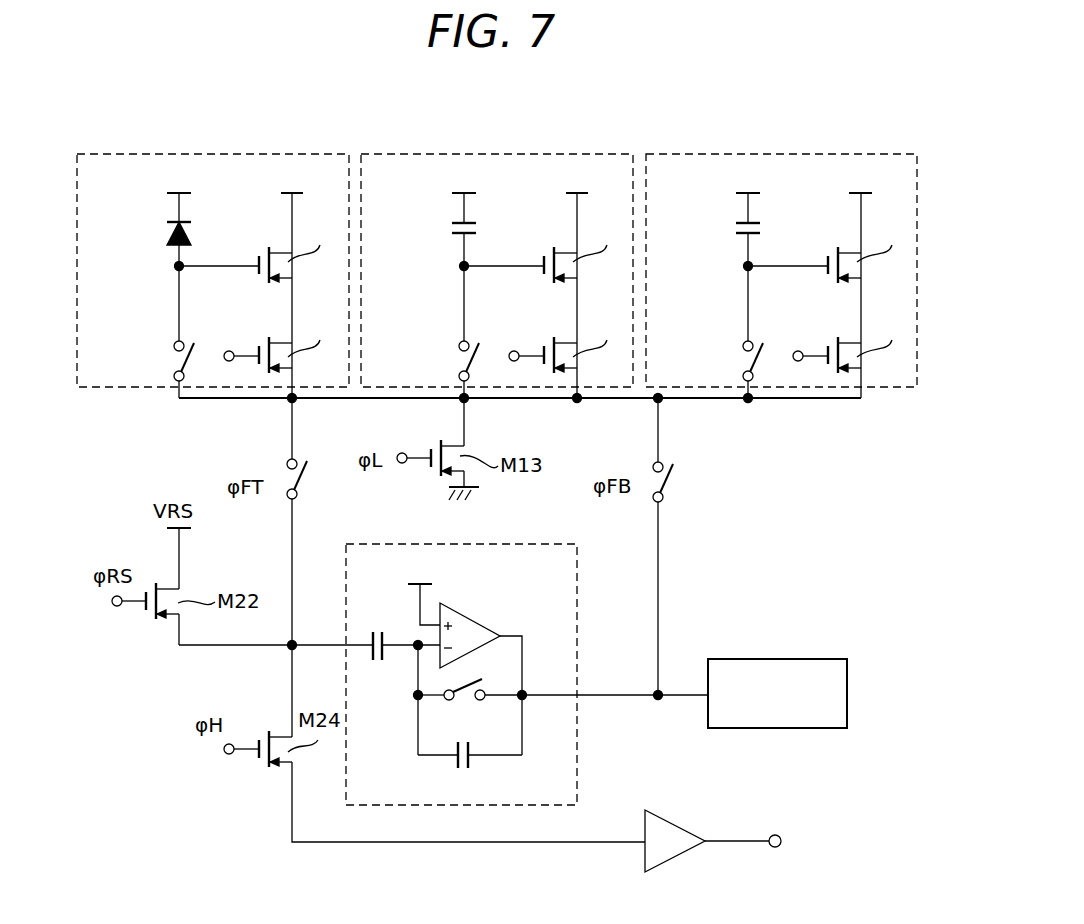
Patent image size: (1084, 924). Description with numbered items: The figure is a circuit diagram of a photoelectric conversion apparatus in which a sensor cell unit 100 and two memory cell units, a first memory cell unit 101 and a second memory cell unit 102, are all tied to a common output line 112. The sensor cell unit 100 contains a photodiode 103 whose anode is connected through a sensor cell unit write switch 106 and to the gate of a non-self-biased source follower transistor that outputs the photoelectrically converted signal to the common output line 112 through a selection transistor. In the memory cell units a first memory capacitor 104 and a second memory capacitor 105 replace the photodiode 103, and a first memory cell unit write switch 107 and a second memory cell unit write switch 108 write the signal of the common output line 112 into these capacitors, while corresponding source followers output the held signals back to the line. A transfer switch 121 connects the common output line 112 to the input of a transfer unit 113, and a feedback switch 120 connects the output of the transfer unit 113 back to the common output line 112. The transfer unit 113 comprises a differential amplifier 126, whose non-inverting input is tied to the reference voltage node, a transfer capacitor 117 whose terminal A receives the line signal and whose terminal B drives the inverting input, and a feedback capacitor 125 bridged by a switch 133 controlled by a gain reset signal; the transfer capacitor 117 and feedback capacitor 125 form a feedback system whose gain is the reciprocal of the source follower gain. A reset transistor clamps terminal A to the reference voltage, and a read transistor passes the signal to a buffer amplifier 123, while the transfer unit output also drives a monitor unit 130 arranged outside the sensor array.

The sensor cell unit 100 is at (205, 153).
The first memory cell unit 101 is at (490, 153).
The second memory cell unit 102 is at (775, 153).
The photodiode 103 is at (191, 232).
The first memory capacitor 104 is at (477, 230).
The second memory capacitor 105 is at (761, 230).
The sensor cell unit write switch 106 is at (176, 357).
The first memory cell unit write switch 107 is at (480, 360).
The second memory cell unit write switch 108 is at (763, 360).
The common output line 112 is at (846, 400).
The transfer unit 113 is at (425, 544).
The transfer capacitor 117 is at (377, 661).
The feedback switch 120 is at (652, 478).
The transfer switch 121 is at (285, 480).
The buffer amplifier 123 is at (678, 822).
The feedback capacitor 125 is at (465, 772).
The differential amplifier 126 is at (476, 620).
The monitor unit 130 is at (778, 659).
The switch 133 is at (492, 678).